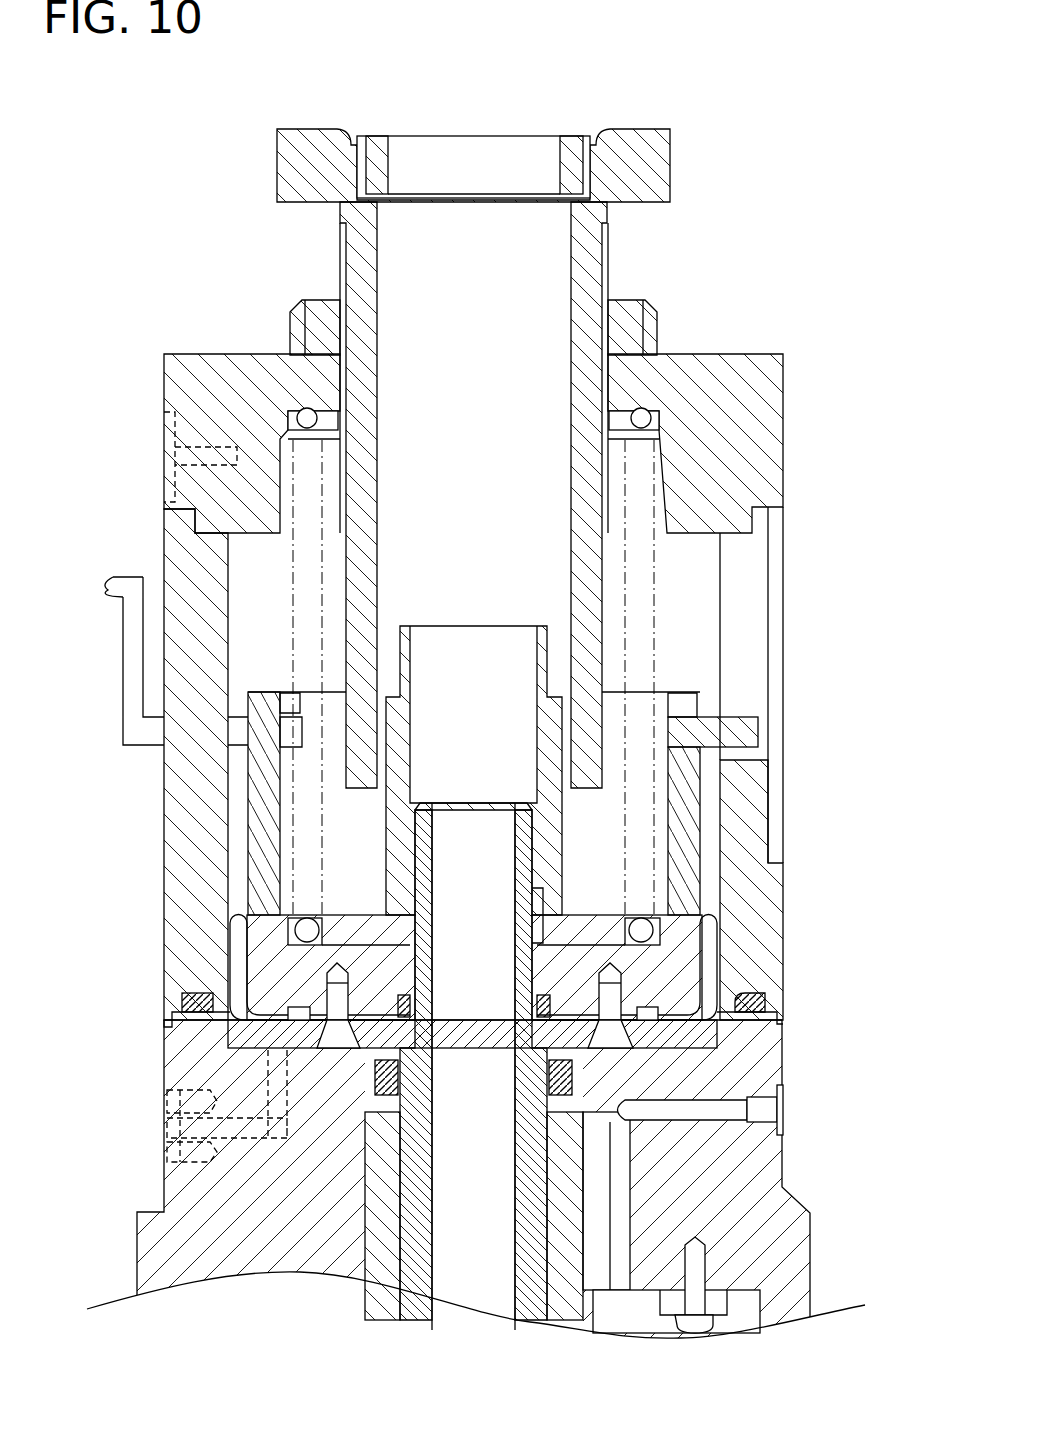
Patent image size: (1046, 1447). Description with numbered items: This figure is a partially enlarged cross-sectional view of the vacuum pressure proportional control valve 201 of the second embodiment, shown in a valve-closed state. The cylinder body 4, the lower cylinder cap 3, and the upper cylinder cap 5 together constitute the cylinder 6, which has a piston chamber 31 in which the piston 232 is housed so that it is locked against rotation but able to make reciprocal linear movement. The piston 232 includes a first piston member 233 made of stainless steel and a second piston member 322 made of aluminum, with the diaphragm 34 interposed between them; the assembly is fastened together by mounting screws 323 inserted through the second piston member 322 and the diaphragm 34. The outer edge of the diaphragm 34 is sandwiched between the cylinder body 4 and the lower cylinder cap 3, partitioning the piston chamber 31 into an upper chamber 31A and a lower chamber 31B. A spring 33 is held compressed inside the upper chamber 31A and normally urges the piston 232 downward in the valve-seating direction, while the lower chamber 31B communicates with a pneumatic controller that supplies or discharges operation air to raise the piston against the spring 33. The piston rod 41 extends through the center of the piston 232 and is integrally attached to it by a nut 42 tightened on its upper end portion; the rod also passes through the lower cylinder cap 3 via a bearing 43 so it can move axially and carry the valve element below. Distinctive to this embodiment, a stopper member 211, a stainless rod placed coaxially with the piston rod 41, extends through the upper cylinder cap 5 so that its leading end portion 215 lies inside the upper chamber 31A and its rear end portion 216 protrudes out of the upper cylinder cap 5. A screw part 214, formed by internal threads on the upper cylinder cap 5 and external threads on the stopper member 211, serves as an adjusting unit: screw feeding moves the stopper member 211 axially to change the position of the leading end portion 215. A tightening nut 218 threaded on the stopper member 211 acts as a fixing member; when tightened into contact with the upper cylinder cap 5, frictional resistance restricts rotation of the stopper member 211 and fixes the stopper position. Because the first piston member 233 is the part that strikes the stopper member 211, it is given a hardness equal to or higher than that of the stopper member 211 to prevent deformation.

The vacuum pressure proportional control valve 201 is at (499, 77).
The rear end portion 216 is at (668, 160).
The stopper member 211 is at (358, 250).
The screw part 214 is at (372, 378).
The tightening nut 218 is at (632, 310).
The spring 33 is at (655, 410).
The upper cylinder cap 5 is at (740, 442).
The cylinder 6 is at (489, 900).
The leading end portion 215 is at (590, 790).
The nut 42 is at (553, 837).
The first piston member 233 is at (257, 850).
The piston 232 is at (403, 933).
The upper chamber 31A is at (708, 863).
The piston chamber 31 is at (799, 763).
The lower chamber 31B is at (707, 932).
The second piston member 322 is at (247, 1028).
The cylinder body 4 is at (527, 763).
The diaphragm 34 is at (748, 1013).
The mounting screws 323 is at (338, 1037).
The lower cylinder cap 3 is at (770, 1198).
The piston rod 41 is at (520, 1213).
The bearing 43 is at (552, 1268).